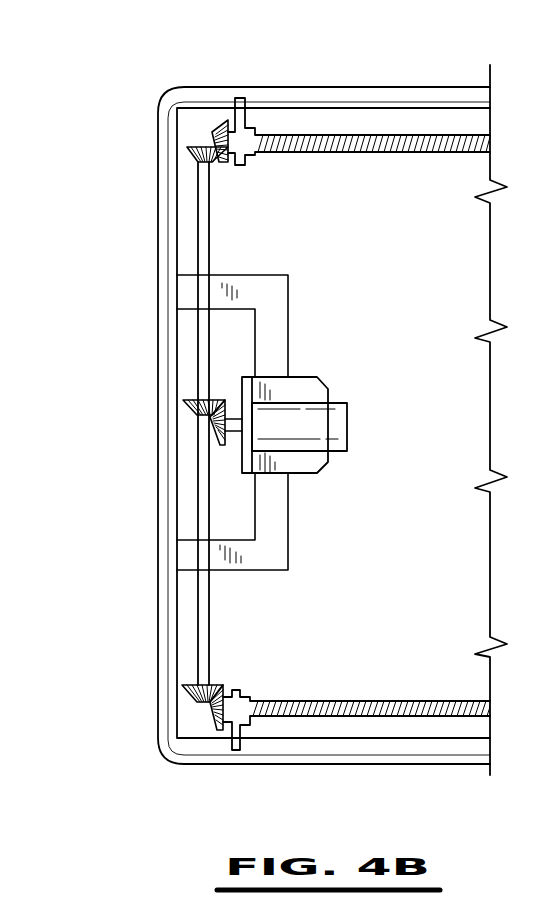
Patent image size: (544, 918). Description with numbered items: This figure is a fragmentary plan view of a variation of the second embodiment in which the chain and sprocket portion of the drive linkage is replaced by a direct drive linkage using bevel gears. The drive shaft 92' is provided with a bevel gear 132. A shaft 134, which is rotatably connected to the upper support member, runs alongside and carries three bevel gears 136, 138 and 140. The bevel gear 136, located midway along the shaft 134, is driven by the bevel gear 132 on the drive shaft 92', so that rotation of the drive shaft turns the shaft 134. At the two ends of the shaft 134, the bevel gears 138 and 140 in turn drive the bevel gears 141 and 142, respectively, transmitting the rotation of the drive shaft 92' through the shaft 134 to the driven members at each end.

The drive shaft 92' is at (299, 396).
The bevel gear 132 is at (226, 445).
The shaft 134 is at (209, 623).
The bevel gear 136 is at (184, 409).
The bevel gear 138 is at (183, 698).
The bevel gear 140 is at (193, 152).
The bevel gear 141 is at (217, 726).
The bevel gear 142 is at (220, 122).